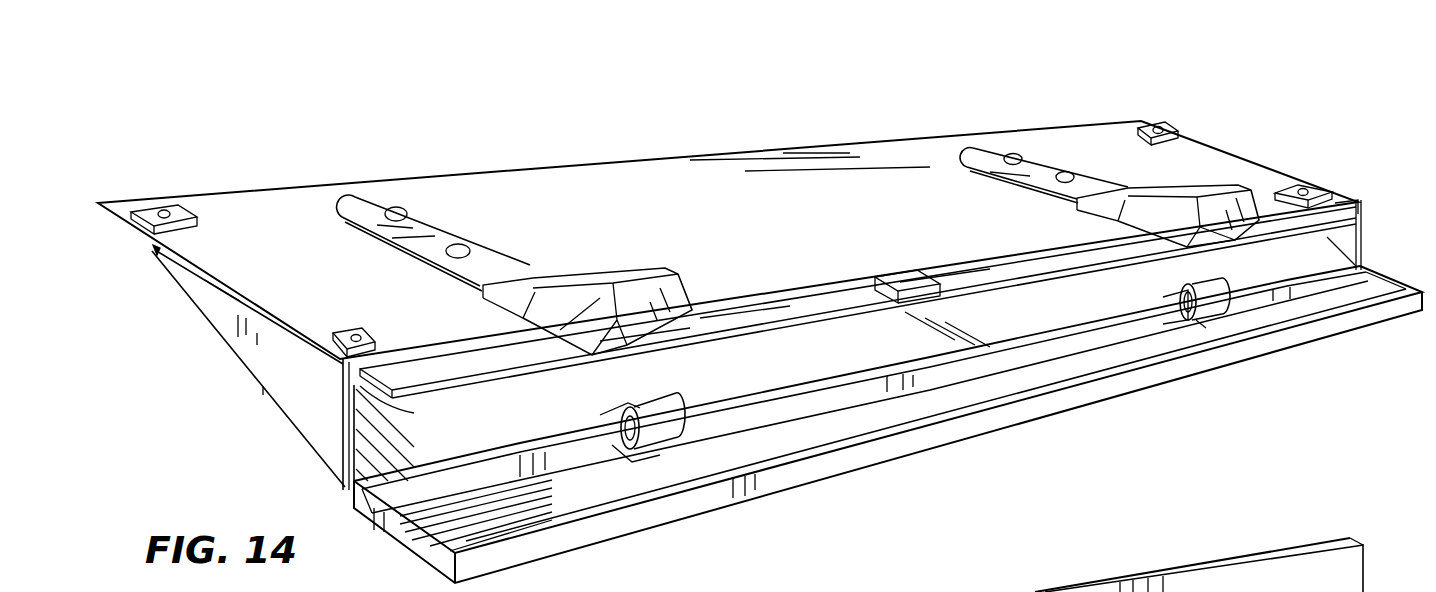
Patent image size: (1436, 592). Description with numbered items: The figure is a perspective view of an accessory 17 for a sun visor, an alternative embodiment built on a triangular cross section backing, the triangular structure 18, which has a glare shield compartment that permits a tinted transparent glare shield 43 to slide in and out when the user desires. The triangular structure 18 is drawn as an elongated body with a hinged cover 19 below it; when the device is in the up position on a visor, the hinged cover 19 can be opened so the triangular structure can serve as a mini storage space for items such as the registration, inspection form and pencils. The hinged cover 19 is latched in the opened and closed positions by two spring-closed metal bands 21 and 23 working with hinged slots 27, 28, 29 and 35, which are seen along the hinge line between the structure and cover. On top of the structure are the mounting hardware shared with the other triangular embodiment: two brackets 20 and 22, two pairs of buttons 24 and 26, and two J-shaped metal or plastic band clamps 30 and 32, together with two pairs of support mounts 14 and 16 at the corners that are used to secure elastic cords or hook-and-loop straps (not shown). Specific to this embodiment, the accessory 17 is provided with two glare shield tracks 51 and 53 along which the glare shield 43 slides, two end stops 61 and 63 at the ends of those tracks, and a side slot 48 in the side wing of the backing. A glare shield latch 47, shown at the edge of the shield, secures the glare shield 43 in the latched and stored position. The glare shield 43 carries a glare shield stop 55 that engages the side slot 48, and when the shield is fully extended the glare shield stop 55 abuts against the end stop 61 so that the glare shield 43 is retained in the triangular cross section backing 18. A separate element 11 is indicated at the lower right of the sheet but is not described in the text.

The container body 11 is at (1343, 510).
The support mounts 14 is at (345, 332).
The support mounts 16 is at (1178, 132).
The accessory 17 is at (448, 148).
The triangular structure 18 is at (245, 379).
The hinged cover 19 is at (998, 428).
The bracket 20 is at (482, 296).
The spring-closed metal band 21 is at (664, 403).
The bracket 22 is at (1088, 212).
The spring-closed metal band 23 is at (1210, 283).
The buttons 24 is at (407, 213).
The buttons 26 is at (1014, 154).
The hinged slot 27 is at (603, 414).
The hinged slot 28 is at (630, 460).
The hinged slot 29 is at (1202, 322).
The J-shaped band clamp 30 is at (668, 270).
The J-shaped band clamp 32 is at (1003, 187).
The hinged slot 35 is at (1166, 299).
The glare shield 43 is at (860, 314).
The glare shield latch 47 is at (903, 280).
The side slot 48 is at (222, 297).
The glare shield track 51 is at (368, 396).
The glare shield track 53 is at (1361, 235).
The glare shield stop 55 is at (155, 252).
The end stop 61 is at (340, 365).
The end stop 63 is at (1354, 204).